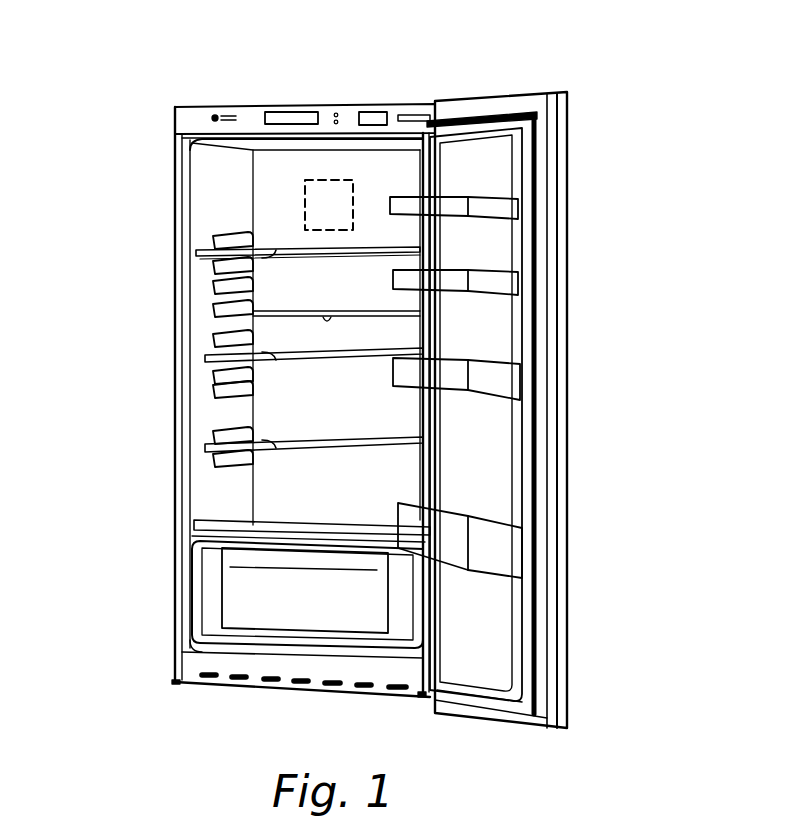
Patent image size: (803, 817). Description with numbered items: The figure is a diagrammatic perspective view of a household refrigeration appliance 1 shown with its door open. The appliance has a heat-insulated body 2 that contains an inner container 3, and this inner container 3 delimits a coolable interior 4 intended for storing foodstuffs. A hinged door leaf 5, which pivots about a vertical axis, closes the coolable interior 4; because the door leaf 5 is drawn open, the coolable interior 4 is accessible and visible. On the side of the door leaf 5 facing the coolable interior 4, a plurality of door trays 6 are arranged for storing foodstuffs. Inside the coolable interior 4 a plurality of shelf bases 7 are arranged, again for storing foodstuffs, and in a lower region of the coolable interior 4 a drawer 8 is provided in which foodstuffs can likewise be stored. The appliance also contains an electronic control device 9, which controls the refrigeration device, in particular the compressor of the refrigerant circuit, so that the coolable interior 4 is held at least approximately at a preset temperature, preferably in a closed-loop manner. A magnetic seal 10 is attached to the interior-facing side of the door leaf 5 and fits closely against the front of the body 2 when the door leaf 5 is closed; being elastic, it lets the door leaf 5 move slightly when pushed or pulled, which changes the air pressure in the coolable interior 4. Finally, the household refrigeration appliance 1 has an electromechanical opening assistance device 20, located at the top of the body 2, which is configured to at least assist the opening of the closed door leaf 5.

The household refrigeration appliance 1 is at (606, 81).
The heat-insulated body 2 is at (172, 667).
The inner container 3 is at (205, 529).
The coolable interior 4 is at (270, 190).
The door leaf 5 is at (562, 650).
The door trays 6 is at (520, 549).
The shelf bases 7 is at (257, 525).
The drawer 8 is at (310, 615).
The electronic control device 9 is at (338, 221).
The magnetic seal 10 is at (478, 690).
The electromechanical opening assistance device 20 is at (373, 117).